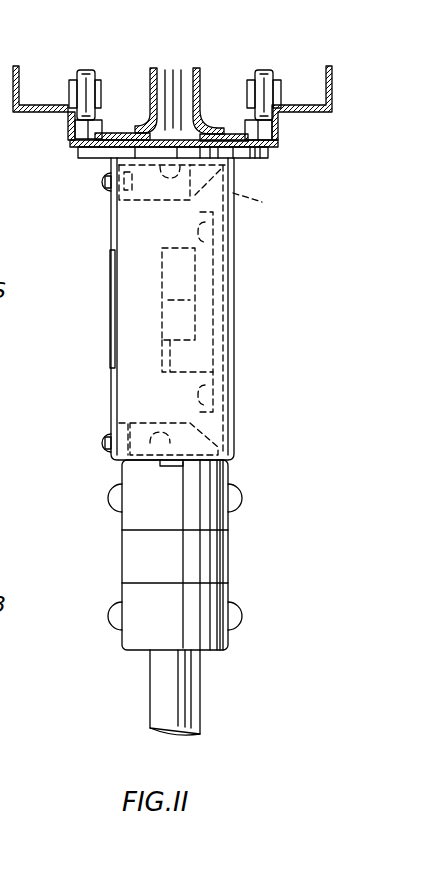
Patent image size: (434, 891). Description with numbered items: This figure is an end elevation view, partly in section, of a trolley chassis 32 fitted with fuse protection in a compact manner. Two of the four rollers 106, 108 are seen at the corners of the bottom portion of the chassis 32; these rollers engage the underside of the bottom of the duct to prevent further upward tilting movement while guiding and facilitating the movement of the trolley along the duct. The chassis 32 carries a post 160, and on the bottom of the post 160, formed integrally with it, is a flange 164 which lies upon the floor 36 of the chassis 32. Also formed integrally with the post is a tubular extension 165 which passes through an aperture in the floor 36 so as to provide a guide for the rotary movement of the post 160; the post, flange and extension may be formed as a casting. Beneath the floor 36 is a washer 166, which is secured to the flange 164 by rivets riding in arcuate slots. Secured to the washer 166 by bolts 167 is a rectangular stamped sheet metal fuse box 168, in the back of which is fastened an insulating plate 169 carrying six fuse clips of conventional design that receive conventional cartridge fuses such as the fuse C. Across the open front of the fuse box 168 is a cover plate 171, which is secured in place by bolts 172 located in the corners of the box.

The chassis 32 is at (22, 112).
The floor 36 is at (278, 143).
The roller 106 is at (80, 72).
The roller 108 is at (267, 70).
The post 160 is at (190, 68).
The flange 164 is at (113, 132).
The tubular extension 165 is at (157, 137).
The washer 166 is at (97, 160).
The bolts 167 is at (233, 193).
The housing 168 is at (135, 390).
The insulating plate 169 is at (217, 267).
The cover plate 171 is at (112, 251).
The bolts 172 is at (104, 190).
The cartridge fuse C is at (177, 318).